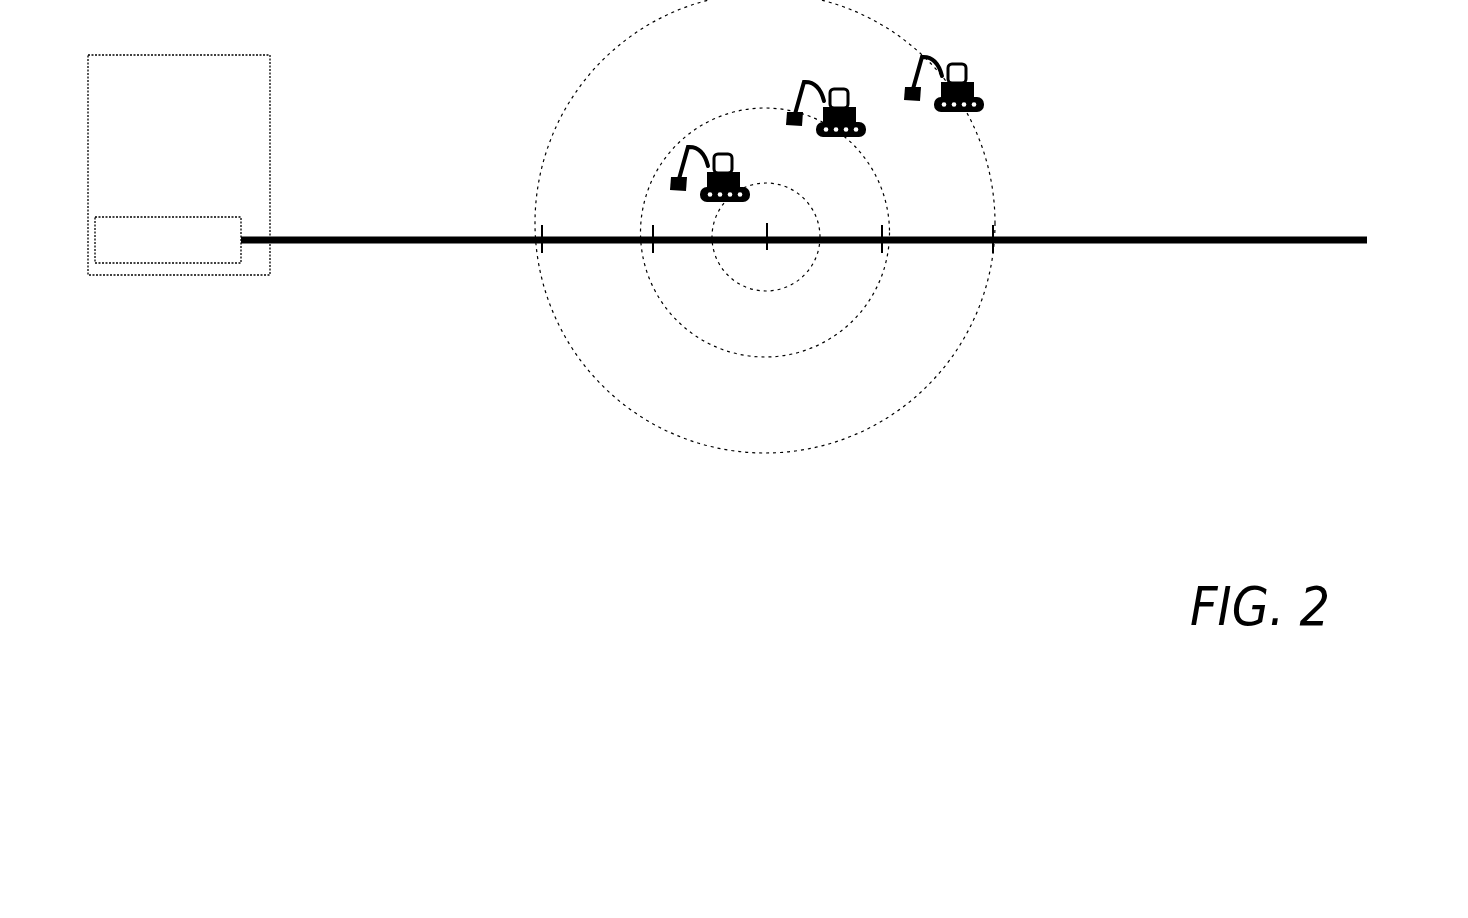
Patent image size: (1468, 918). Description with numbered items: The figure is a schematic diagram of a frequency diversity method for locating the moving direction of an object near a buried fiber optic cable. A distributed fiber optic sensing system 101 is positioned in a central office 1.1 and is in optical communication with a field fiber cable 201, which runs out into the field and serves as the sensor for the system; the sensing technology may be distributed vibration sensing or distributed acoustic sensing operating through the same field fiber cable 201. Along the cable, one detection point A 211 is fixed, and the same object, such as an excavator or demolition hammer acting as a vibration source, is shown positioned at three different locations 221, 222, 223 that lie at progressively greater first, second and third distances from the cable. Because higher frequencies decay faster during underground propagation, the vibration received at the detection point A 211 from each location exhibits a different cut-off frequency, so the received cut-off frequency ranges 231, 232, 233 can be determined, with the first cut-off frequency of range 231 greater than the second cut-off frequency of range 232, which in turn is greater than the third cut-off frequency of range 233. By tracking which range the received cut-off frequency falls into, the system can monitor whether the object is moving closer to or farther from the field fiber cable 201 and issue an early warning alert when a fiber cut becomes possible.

The central office 1.1 is at (179, 165).
The distributed fiber optic sensing (DFOS) system 101 is at (168, 240).
The field fiber cable 201 is at (323, 241).
The detection point A 211 is at (772, 259).
The object at first location 221 is at (767, 237).
The object at second location 222 is at (767, 237).
The object at third location 223 is at (767, 237).
The received cut-off frequency range f1 231 is at (817, 239).
The received cut-off frequency range f2 232 is at (883, 201).
The received cut-off frequency range f3 233 is at (990, 170).